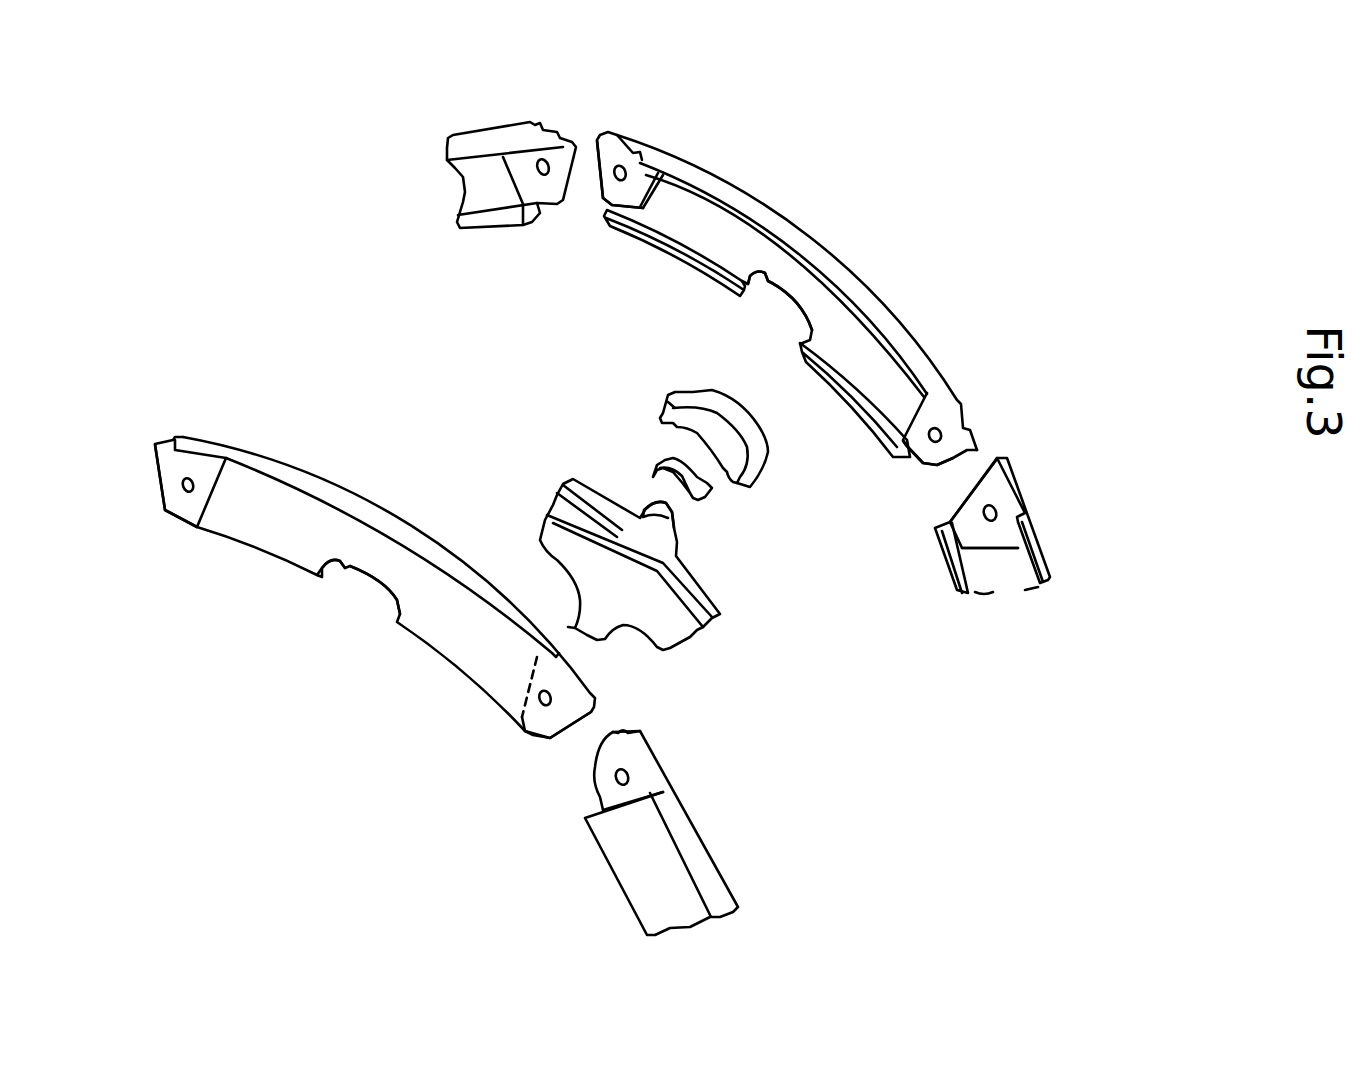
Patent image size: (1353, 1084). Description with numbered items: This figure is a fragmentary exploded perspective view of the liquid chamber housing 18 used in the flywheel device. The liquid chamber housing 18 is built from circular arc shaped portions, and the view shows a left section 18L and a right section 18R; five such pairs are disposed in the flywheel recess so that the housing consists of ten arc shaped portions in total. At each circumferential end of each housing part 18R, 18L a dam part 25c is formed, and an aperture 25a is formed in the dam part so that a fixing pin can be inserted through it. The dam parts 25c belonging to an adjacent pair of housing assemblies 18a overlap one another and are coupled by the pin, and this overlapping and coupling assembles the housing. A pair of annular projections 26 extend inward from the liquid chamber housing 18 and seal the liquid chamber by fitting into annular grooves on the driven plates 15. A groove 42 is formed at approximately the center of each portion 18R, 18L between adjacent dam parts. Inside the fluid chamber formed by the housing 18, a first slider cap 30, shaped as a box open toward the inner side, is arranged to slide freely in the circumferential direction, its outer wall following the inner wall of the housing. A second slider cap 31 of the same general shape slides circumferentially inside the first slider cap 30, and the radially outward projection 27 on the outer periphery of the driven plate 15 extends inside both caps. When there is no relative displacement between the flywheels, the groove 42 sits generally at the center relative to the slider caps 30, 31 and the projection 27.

The liquid chamber housing 18 is at (848, 229).
The right section 18R is at (733, 193).
The left section 18L is at (348, 507).
The housing assembly 18a is at (472, 137).
The aperture 25a is at (550, 157).
The dam part 25c is at (518, 162).
The annular projection 26 is at (645, 233).
The groove 42 is at (770, 291).
The first slider cap 30 is at (668, 395).
The projection 27 is at (647, 507).
The second slider cap 31 is at (712, 495).
The driven plate 15 is at (557, 532).